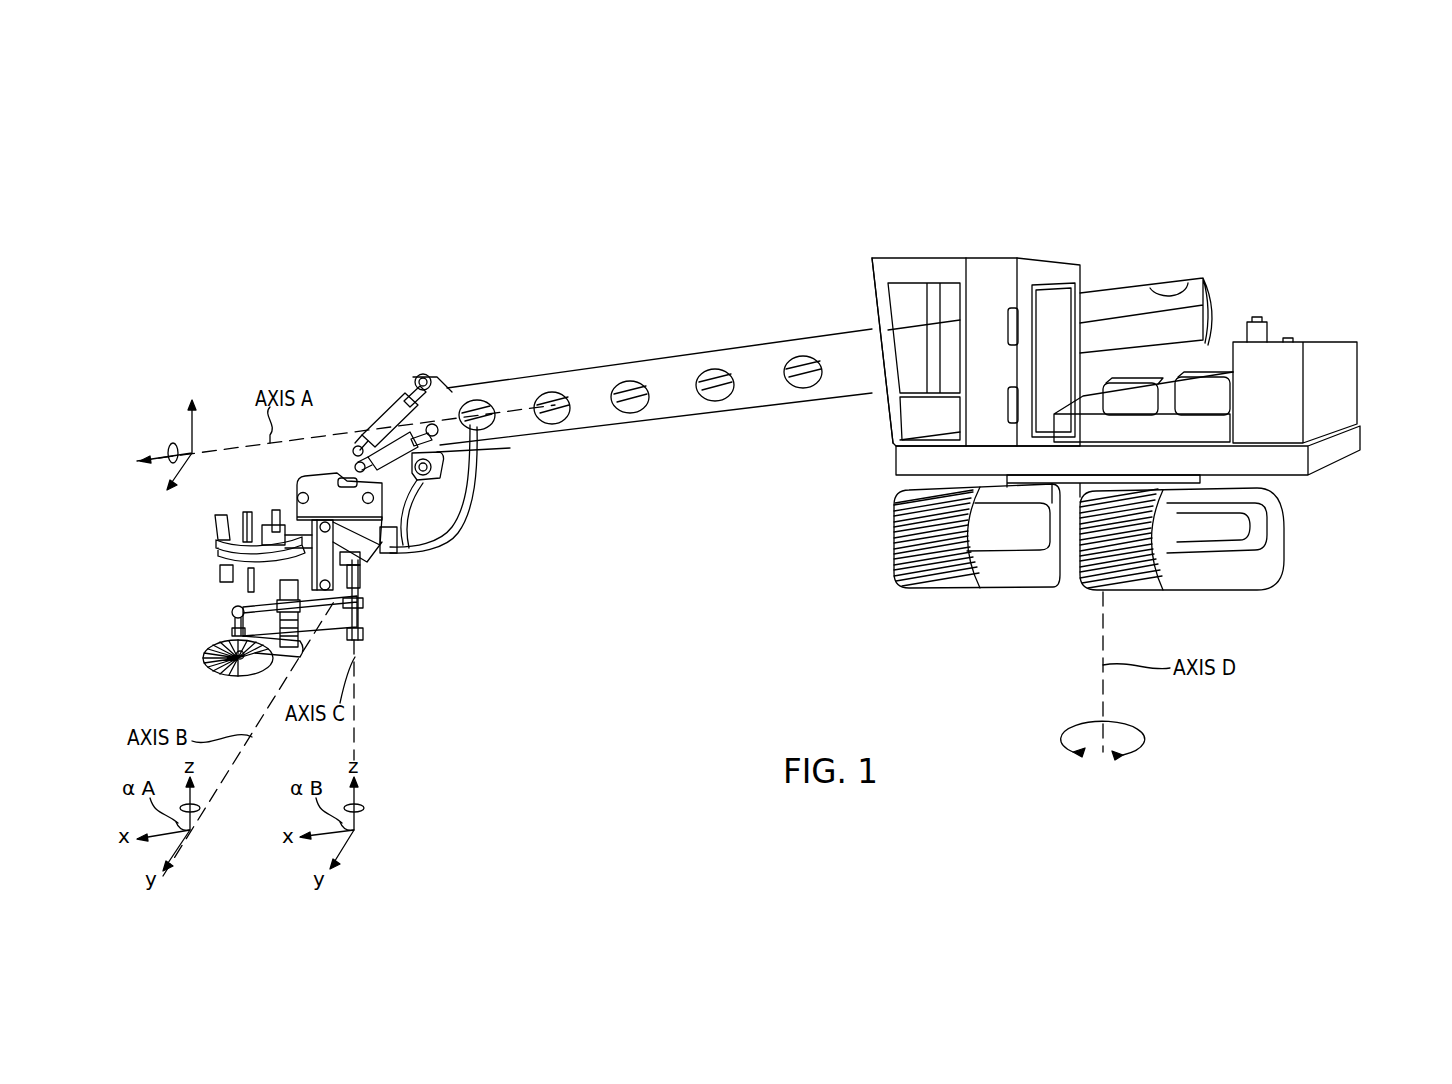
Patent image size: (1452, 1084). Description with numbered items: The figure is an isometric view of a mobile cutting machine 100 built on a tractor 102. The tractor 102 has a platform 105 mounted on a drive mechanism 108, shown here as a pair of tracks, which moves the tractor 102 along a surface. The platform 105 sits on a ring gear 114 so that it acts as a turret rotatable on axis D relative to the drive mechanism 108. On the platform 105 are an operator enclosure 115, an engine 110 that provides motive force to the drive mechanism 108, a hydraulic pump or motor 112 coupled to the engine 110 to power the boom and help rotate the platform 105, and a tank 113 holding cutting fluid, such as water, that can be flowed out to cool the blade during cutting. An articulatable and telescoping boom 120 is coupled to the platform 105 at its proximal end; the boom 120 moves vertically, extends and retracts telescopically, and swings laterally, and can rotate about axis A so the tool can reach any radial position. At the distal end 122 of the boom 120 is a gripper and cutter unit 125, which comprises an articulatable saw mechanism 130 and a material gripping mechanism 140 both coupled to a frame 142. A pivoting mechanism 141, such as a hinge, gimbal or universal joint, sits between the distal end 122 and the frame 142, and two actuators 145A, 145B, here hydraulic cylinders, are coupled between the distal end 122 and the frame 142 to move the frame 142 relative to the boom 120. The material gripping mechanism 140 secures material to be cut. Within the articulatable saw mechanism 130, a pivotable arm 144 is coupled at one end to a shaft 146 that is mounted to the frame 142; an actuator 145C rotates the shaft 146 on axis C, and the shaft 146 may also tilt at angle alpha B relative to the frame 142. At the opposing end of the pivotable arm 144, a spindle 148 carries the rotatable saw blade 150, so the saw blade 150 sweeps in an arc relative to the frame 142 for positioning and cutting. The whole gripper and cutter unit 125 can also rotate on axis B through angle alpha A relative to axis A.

The mobile cutting machine 100 is at (1165, 150).
The tractor 102 is at (837, 467).
The platform 105 is at (1286, 462).
The drive mechanism 108 is at (1078, 598).
The engine 110 is at (1348, 382).
The hydraulic pump or motor 112 is at (1213, 387).
The tank 113 is at (1135, 393).
The ring gear 114 is at (1073, 477).
The operator enclosure 115 is at (1004, 258).
The boom 120 is at (752, 345).
The distal end 122 is at (416, 367).
The gripper and cutter unit 125 is at (208, 371).
The articulatable saw mechanism 130 is at (275, 675).
The material gripping mechanism 140 is at (233, 514).
The pivoting mechanism 141 is at (440, 477).
The frame 142 is at (320, 470).
The pivotable arm 144 is at (253, 603).
The actuator 145A is at (393, 410).
The actuator 145B is at (447, 383).
The actuator 145C is at (393, 563).
The shaft 146 is at (367, 605).
The spindle 148 is at (245, 623).
The saw blade 150 is at (205, 655).